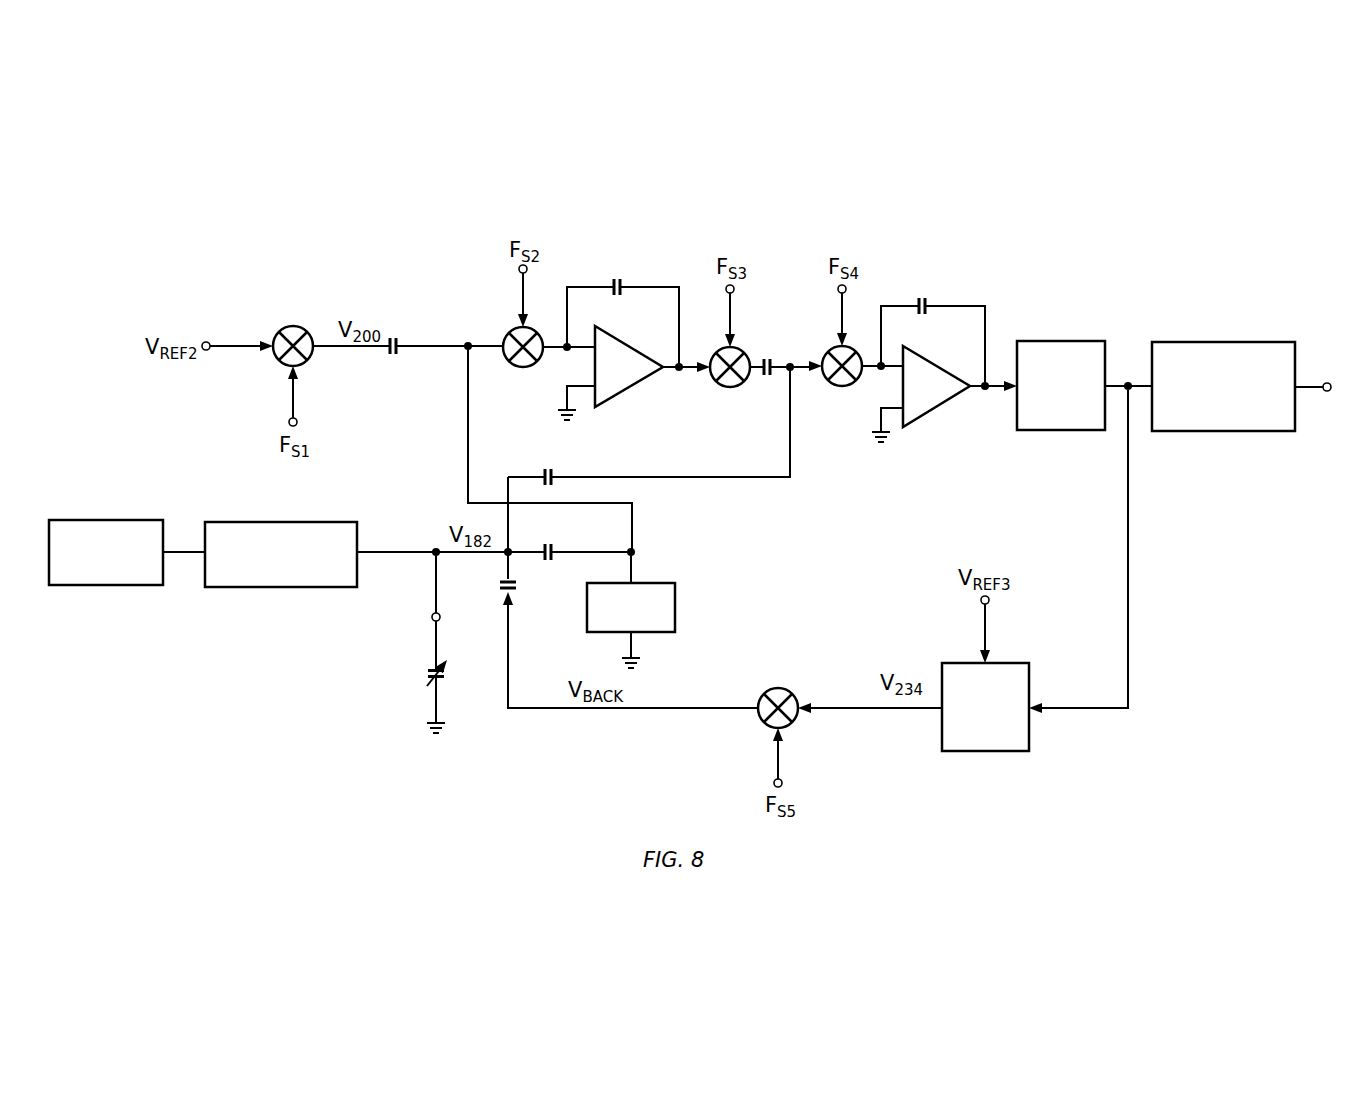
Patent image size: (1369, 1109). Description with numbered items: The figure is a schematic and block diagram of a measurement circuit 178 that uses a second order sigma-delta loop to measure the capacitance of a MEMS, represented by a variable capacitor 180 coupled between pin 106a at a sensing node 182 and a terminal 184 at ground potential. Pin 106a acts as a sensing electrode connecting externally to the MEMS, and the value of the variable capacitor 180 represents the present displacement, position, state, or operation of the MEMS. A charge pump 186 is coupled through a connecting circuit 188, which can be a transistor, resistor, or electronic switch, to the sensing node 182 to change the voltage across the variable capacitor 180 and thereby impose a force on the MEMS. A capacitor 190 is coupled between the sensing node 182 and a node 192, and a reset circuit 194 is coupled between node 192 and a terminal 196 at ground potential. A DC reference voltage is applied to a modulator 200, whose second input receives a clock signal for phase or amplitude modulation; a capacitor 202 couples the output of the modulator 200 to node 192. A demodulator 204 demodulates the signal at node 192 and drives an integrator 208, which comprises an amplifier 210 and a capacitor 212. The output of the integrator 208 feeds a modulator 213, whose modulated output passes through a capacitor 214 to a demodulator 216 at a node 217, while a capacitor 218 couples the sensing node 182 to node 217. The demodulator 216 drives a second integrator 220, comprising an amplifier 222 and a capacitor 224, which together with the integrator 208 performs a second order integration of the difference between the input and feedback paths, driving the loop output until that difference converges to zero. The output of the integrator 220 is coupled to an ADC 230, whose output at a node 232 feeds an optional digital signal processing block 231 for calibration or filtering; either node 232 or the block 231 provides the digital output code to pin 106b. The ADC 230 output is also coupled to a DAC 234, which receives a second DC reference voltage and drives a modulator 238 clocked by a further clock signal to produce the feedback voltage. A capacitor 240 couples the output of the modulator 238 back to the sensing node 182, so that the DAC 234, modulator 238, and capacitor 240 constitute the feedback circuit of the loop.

The measurement circuit 178 is at (134, 208).
The variable capacitor 180 is at (427, 685).
The sensing node 182 is at (434, 549).
The terminal 184 is at (433, 733).
The charge pump 186 is at (107, 520).
The connecting circuit 188 is at (280, 522).
The capacitor 190 is at (550, 543).
The node 192 is at (638, 552).
The reset circuit 194 is at (677, 607).
The terminal 196 is at (634, 671).
The modulator 200 is at (288, 327).
The capacitor 202 is at (397, 340).
The demodulator 204 is at (523, 378).
The integrator 208 is at (690, 258).
The amplifier 210 is at (630, 390).
The capacitor 212 is at (620, 278).
The modulator 213 is at (730, 398).
The capacitor 214 is at (766, 380).
The demodulator 216 is at (840, 392).
The node 217 is at (790, 360).
The capacitor 218 is at (550, 468).
The integrator 220 is at (992, 272).
The amplifier 222 is at (938, 408).
The capacitor 224 is at (925, 298).
The ADC 230 is at (1062, 340).
The digital signal processing block 231 is at (1223, 342).
The node 232 is at (1128, 380).
The DAC 234 is at (987, 752).
The modulator 238 is at (782, 690).
The capacitor 240 is at (520, 586).
The pin 106a is at (431, 620).
The pin 106b is at (1329, 392).